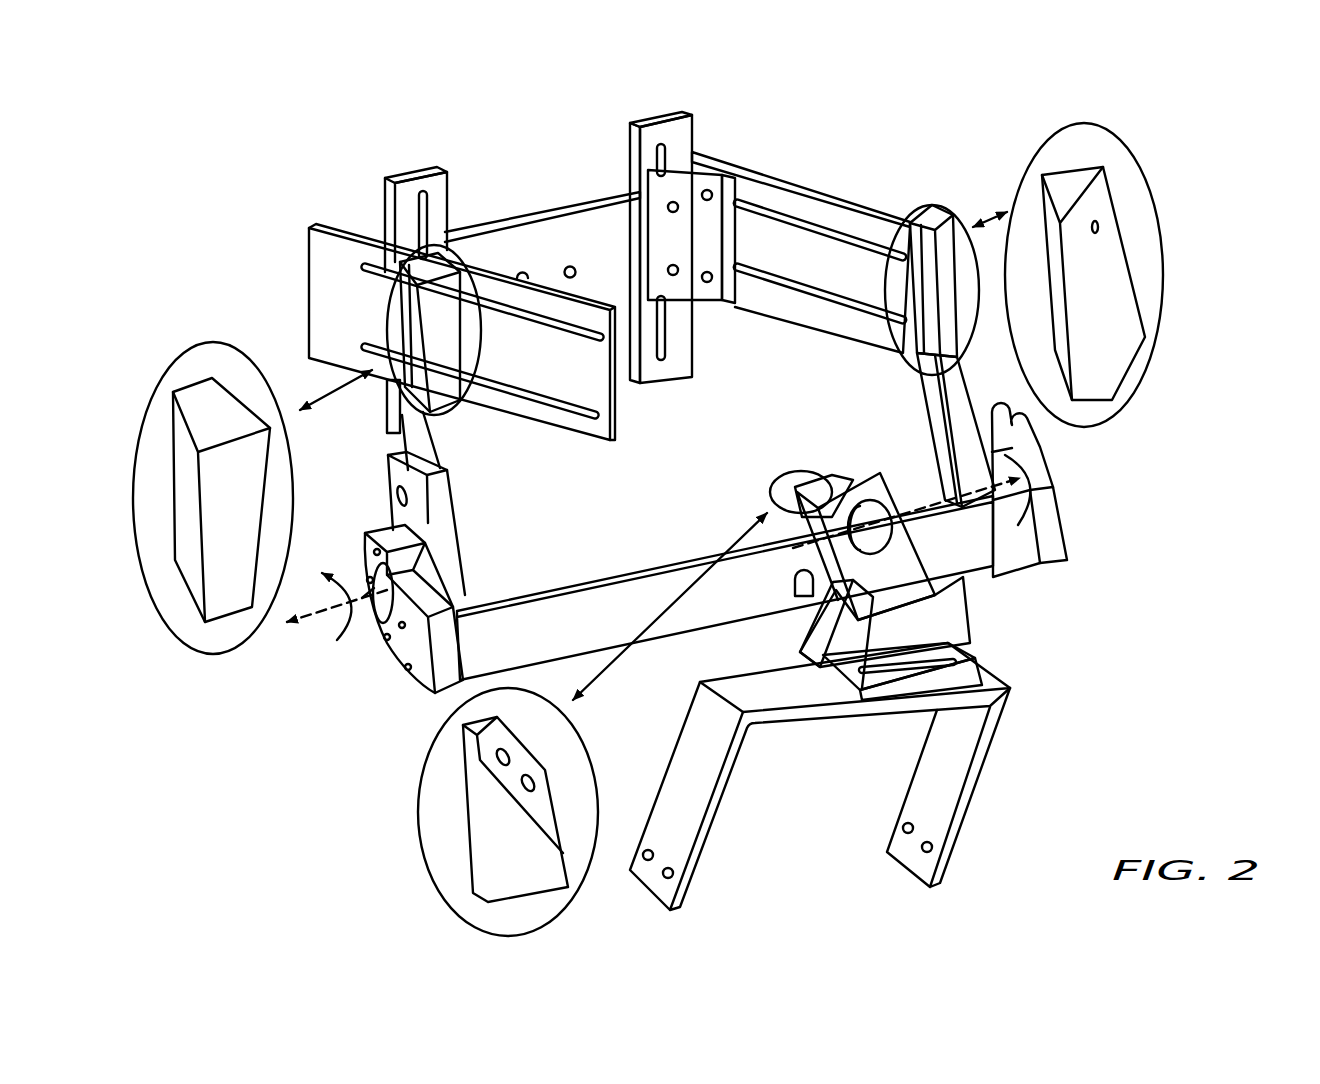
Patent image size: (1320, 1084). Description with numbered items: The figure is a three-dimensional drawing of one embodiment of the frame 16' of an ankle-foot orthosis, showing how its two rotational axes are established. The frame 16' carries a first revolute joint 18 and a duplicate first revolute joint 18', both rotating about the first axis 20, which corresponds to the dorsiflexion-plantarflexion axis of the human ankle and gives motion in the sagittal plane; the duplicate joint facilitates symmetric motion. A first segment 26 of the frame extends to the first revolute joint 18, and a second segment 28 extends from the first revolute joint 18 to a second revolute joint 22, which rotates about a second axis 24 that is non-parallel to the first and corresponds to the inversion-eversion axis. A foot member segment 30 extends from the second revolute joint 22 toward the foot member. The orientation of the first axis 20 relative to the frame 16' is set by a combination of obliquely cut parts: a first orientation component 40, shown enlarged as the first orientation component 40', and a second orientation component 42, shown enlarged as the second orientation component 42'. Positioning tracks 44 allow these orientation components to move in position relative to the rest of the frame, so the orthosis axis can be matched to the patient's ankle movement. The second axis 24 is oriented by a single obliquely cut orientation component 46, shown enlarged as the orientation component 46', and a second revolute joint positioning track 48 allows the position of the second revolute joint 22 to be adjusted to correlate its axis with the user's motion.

The frame 16' is at (567, 225).
The first revolute joint 18 is at (393, 572).
The duplicate first revolute joint 18' is at (1036, 464).
The first axis 20 is at (288, 623).
The second revolute joint 22 is at (872, 515).
The second axis 24 is at (985, 490).
The first segment 26 is at (522, 205).
The second segment 28 is at (613, 600).
The foot member segment 30 is at (997, 728).
The first orientation component 40 is at (441, 299).
The first orientation component (enlarged) 40' is at (252, 456).
The second orientation component 42 is at (940, 326).
The second orientation component (enlarged) 42' is at (1078, 262).
The positioning tracks 44 is at (548, 402).
The orientation component 46 is at (811, 463).
The orientation component (enlarged) 46' is at (553, 724).
The second revolute joint positioning track 48 is at (797, 574).